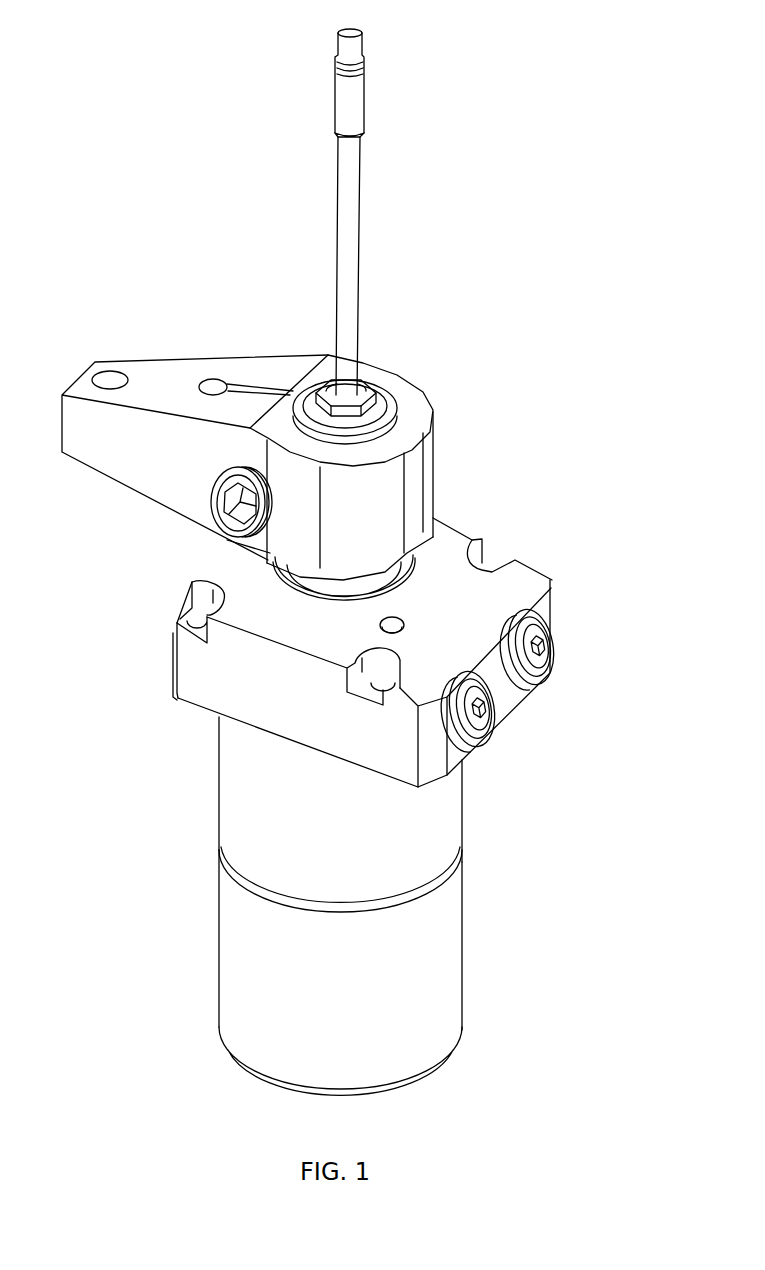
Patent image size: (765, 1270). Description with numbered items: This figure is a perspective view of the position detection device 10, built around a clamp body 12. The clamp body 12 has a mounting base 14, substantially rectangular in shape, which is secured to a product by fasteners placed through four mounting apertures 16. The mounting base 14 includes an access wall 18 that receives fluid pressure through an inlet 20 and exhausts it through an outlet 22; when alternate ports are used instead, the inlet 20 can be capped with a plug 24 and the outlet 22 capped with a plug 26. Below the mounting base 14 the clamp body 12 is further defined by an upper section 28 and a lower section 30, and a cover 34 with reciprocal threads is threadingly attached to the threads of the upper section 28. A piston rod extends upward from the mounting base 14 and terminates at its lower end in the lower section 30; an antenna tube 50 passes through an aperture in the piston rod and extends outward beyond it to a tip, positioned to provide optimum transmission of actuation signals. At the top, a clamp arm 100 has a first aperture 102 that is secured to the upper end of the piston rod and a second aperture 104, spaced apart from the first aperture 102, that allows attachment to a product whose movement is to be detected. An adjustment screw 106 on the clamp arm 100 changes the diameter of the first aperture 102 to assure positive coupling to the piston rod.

The valve body 10 is at (585, 565).
The clamp body 12 is at (467, 792).
The mounting base 14 is at (538, 567).
The mounting apertures 16 is at (175, 622).
The access wall 18 is at (543, 607).
The inlet 20 is at (460, 743).
The outlet 22 is at (513, 688).
The plug 24 is at (490, 718).
The plug 26 is at (547, 642).
The upper section 28 is at (465, 840).
The lower section 30 is at (465, 940).
The cover 34 is at (452, 1025).
The antenna tube 50 is at (363, 200).
The clamp arm 100 is at (450, 432).
The first aperture 102 is at (398, 417).
The second aperture 104 is at (120, 372).
The adjustment screw 106 is at (215, 500).